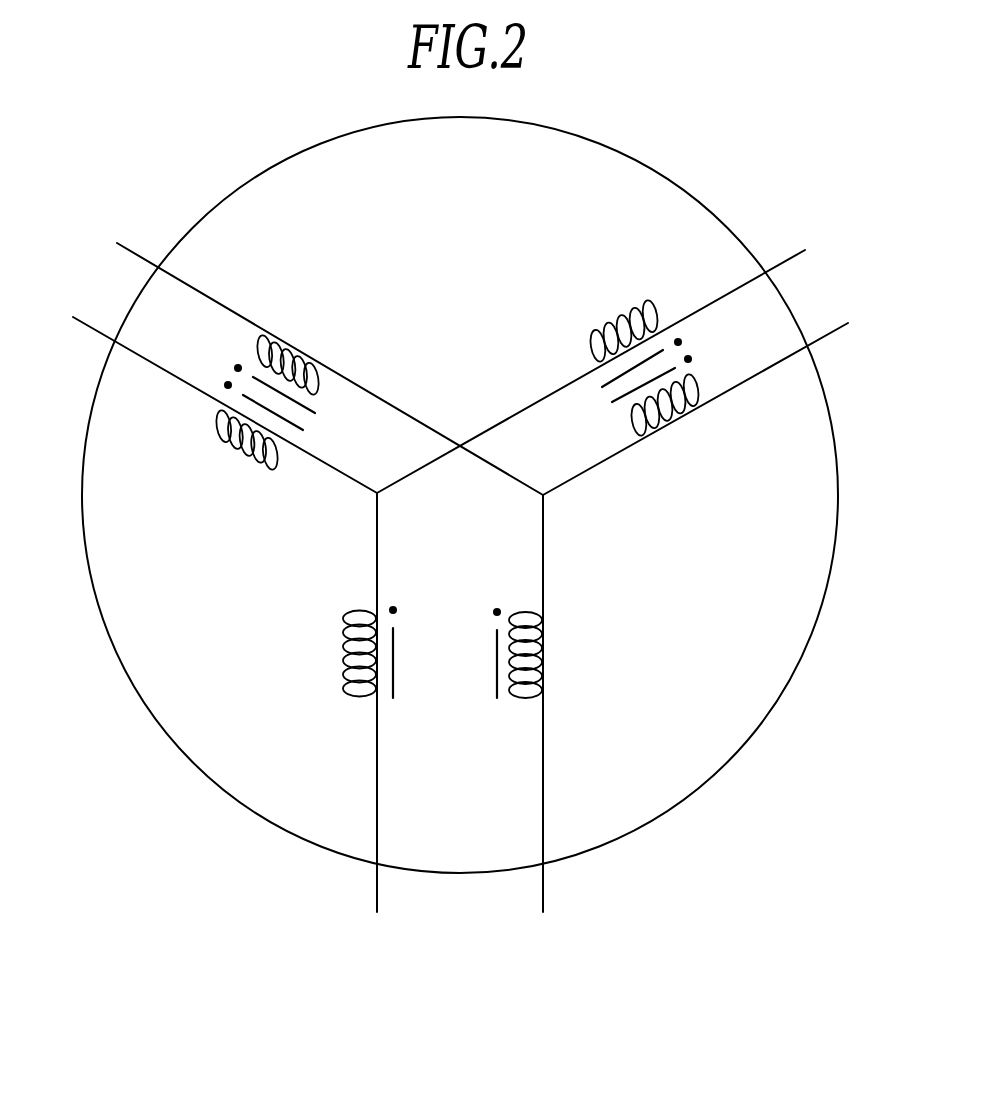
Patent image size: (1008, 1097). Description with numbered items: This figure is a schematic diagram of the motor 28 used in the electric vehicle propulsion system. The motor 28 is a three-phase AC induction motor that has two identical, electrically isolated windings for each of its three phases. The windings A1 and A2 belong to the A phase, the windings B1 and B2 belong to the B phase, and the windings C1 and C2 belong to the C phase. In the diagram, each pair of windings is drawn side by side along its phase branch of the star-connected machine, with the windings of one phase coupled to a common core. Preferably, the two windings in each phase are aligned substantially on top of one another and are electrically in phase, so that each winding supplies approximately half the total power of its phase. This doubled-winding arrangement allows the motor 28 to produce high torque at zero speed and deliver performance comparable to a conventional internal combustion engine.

The motor 28 is at (817, 620).
The winding A1 is at (62, 298).
The winding A2 is at (105, 225).
The winding B1 is at (390, 930).
The winding B2 is at (555, 930).
The winding C1 is at (815, 233).
The winding C2 is at (860, 306).